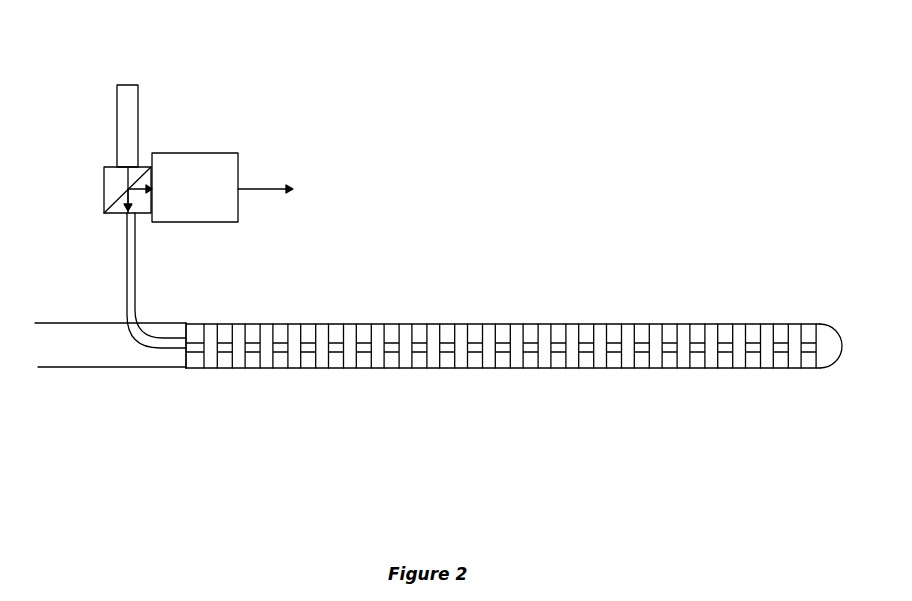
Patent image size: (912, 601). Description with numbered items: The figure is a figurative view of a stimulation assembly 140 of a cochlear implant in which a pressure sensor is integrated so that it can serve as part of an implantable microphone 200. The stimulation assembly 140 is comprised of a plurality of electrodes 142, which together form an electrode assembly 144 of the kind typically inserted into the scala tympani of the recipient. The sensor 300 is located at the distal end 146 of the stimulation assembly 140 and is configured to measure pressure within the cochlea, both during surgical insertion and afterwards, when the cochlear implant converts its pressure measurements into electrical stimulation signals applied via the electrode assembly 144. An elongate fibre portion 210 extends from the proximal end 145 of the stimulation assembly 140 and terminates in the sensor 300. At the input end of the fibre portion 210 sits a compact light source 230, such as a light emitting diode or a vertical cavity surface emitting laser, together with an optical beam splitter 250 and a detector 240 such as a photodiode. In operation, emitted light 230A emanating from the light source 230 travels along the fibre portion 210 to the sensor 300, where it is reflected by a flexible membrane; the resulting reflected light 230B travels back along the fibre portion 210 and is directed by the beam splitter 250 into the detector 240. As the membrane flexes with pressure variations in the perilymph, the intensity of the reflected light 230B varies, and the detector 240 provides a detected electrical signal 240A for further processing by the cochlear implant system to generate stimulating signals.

The implantable microphone 200 is at (467, 94).
The light source 230 is at (140, 93).
The optical beam splitter 250 is at (103, 187).
The emitted light 230A is at (112, 199).
The reflected light 230B is at (131, 200).
The detector 240 is at (202, 153).
The detected electrical signal 240A is at (288, 189).
The fibre portion 210 is at (148, 332).
The stimulation assembly 140 is at (82, 368).
The proximal end 145 is at (190, 368).
The electrodes 142 is at (595, 323).
The electrode assembly 144 is at (431, 312).
The distal end 146 is at (808, 370).
The sensor 300 is at (841, 338).